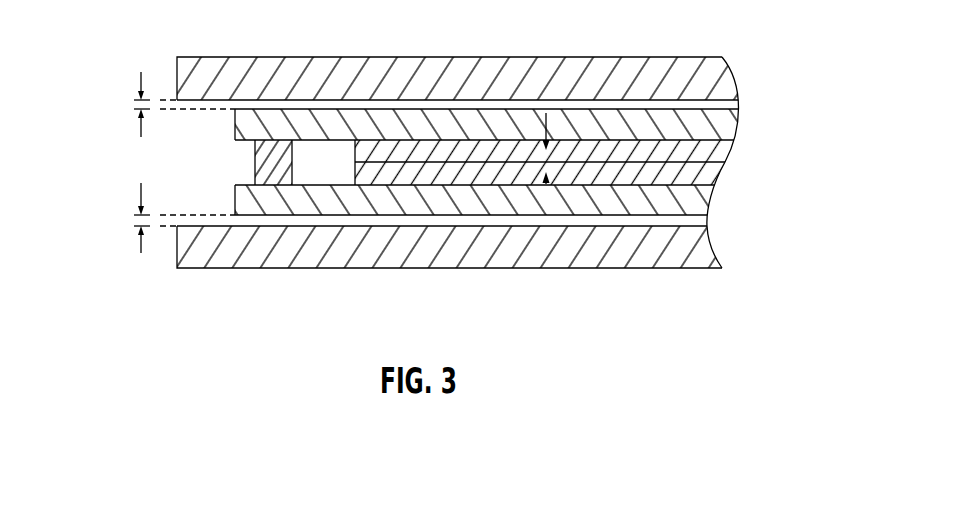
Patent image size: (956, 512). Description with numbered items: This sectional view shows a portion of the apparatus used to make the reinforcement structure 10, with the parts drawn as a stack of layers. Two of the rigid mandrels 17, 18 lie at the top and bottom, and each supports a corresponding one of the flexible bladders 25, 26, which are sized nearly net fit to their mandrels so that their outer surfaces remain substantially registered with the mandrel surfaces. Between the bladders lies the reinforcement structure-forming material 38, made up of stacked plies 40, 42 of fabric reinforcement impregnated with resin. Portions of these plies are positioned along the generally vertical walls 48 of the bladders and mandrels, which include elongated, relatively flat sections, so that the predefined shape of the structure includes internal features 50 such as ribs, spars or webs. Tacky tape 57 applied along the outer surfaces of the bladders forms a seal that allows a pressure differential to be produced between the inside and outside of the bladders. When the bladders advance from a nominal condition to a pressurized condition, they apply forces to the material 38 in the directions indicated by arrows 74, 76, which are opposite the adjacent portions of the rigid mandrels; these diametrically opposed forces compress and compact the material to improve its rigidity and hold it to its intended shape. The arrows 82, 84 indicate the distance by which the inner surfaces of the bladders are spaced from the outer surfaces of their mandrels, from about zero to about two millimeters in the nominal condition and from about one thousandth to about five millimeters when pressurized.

The reinforcement structure 10 is at (441, 161).
The rigid mandrel 17 is at (597, 70).
The rigid mandrel 18 is at (594, 258).
The flexible bladder 25 is at (242, 115).
The flexible bladder 26 is at (243, 188).
The reinforcement structure-forming material 38 is at (693, 177).
The ply 40 is at (690, 143).
The ply 42 is at (707, 185).
The generally vertical wall 48 is at (468, 165).
The internal feature 50 is at (678, 147).
The tacky tape 57 is at (257, 152).
The arrow 74 is at (546, 115).
The arrow 76 is at (546, 183).
The arrow 82 is at (140, 192).
The arrow 84 is at (140, 83).